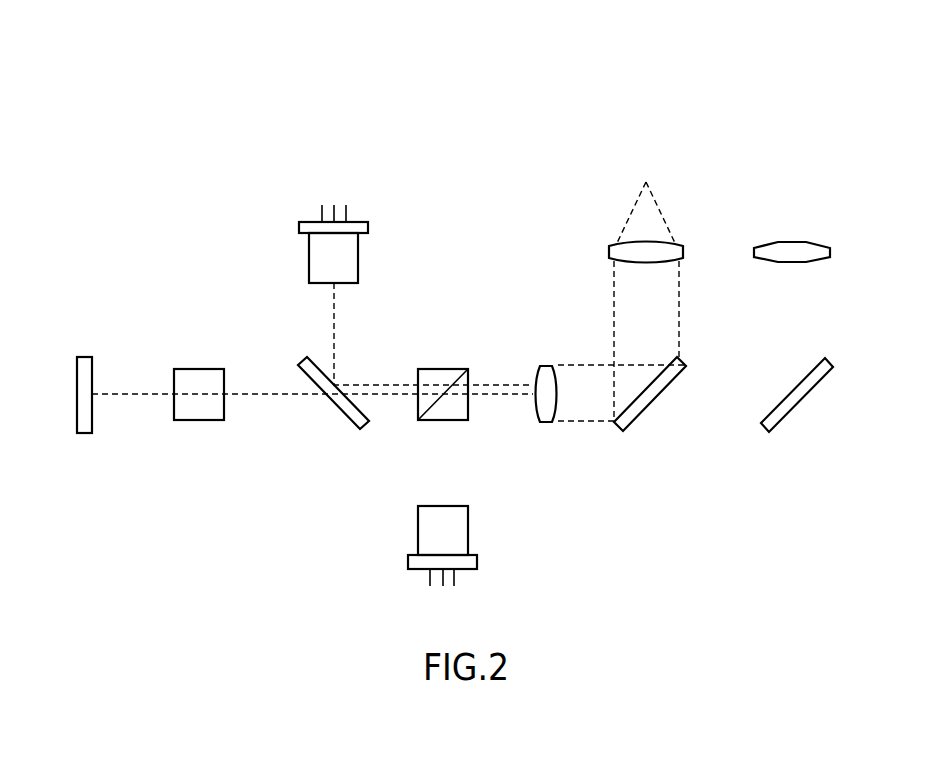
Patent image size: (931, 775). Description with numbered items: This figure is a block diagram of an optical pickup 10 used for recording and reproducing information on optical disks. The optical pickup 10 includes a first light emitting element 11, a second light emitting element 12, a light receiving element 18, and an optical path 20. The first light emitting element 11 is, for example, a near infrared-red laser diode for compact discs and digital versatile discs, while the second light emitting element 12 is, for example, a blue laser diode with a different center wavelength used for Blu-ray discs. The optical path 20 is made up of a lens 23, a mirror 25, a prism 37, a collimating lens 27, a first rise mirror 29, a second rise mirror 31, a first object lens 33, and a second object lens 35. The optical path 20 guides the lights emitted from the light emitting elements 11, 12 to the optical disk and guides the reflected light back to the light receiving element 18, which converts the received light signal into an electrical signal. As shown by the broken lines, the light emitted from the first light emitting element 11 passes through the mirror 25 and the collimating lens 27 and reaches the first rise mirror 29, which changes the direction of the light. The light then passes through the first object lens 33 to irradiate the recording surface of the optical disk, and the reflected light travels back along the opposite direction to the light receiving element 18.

The optical pickup 10 is at (602, 108).
The first light emitting element 11 is at (323, 249).
The second light emitting element 12 is at (450, 532).
The light receiving element 18 is at (85, 425).
The optical path 20 is at (539, 308).
The lens 23 is at (199, 405).
The mirror 25 is at (345, 405).
The collimating lens 27 is at (547, 410).
The first rise mirror 29 is at (633, 412).
The second rise mirror 31 is at (777, 413).
The first object lens 33 is at (610, 252).
The second object lens 35 is at (755, 252).
The prism 37 is at (440, 377).